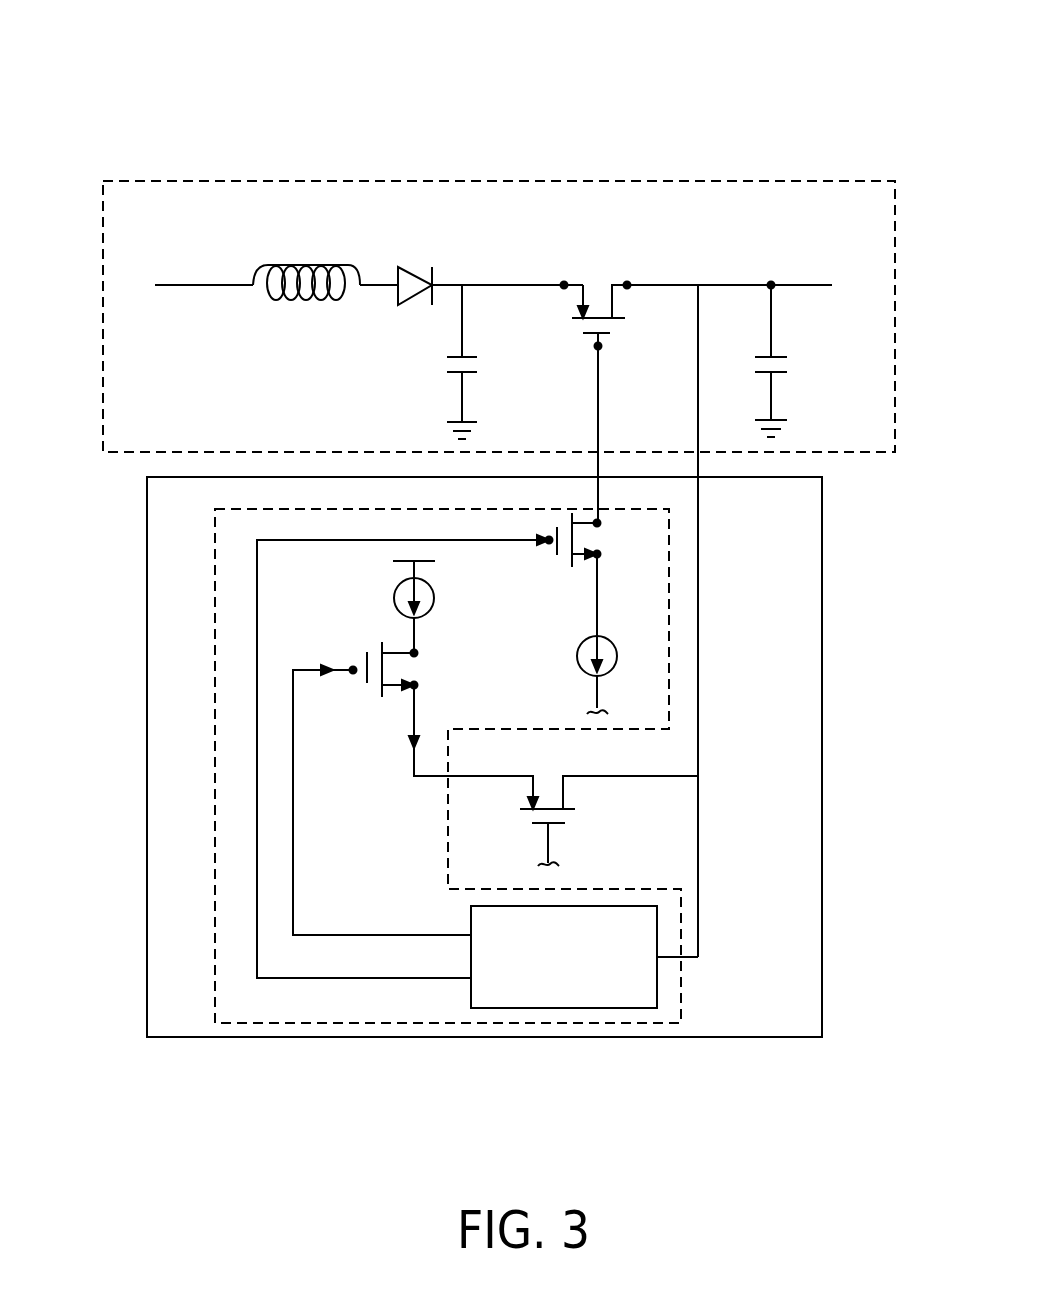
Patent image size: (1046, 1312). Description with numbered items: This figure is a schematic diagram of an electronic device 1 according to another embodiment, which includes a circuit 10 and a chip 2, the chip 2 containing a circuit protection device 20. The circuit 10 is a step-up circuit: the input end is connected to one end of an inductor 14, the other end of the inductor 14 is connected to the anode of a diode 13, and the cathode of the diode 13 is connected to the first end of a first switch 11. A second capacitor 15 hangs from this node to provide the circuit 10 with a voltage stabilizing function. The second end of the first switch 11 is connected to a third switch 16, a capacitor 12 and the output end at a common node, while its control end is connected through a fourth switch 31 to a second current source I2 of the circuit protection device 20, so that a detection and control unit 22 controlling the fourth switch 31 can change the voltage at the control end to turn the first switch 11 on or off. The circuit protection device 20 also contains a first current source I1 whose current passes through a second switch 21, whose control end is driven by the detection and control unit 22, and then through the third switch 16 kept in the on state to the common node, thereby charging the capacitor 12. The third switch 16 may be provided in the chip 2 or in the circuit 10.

The electronic device 1 is at (448, 42).
The circuit 10 is at (498, 181).
The first switch 11 is at (598, 277).
The capacitor 12 is at (790, 362).
The diode 13 is at (418, 268).
The inductor 14 is at (308, 263).
The second capacitor 15 is at (482, 365).
The third switch 16 is at (570, 818).
The chip 2 is at (530, 1040).
The circuit protection device 20 is at (681, 986).
The second switch 21 is at (370, 647).
The detection and control unit 22 is at (584, 957).
The fourth switch 31 is at (598, 540).
The first current source I1 is at (395, 597).
The second current source I2 is at (577, 656).